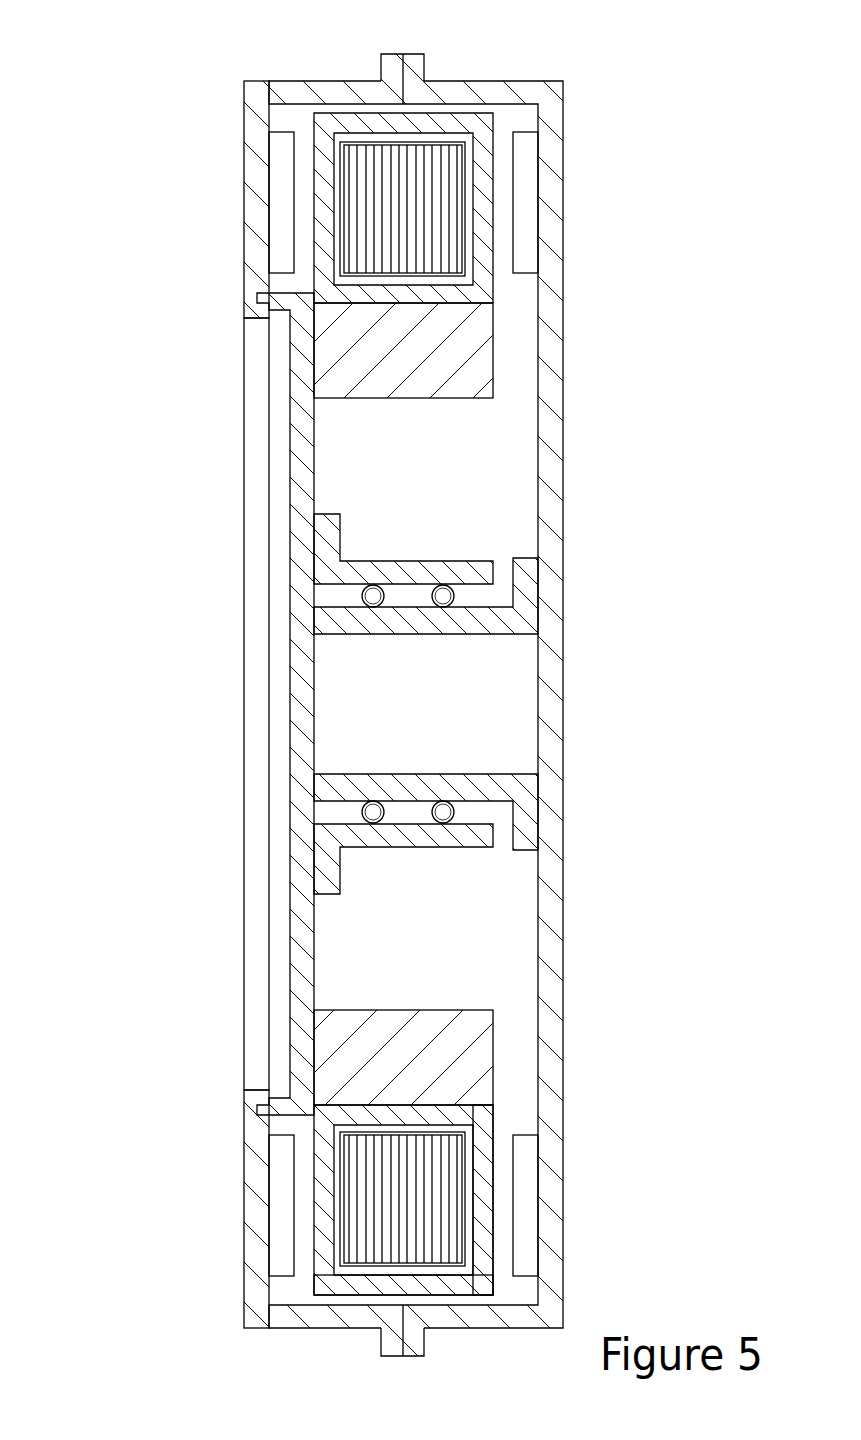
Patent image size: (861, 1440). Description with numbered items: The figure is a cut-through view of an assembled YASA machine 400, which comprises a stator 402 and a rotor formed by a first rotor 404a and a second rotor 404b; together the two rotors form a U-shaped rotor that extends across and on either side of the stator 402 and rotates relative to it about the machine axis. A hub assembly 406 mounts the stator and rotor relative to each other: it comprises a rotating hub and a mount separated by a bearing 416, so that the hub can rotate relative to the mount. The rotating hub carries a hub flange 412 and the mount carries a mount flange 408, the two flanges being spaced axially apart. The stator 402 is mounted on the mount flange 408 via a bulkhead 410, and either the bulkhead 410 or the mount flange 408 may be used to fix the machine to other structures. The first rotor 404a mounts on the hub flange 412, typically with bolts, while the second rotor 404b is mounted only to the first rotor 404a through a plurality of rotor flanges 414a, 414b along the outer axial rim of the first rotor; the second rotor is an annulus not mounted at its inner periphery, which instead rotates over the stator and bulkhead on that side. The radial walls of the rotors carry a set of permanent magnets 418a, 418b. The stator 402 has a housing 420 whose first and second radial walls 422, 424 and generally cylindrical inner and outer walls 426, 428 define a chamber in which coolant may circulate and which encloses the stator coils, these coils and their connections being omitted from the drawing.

The YASA machine 400 is at (161, 60).
The stator 402 is at (312, 271).
The first rotor 404a is at (557, 192).
The second rotor 404b is at (255, 164).
The hub assembly 406 is at (432, 663).
The mount flange 408 is at (323, 533).
The bulkhead 410 is at (302, 927).
The hub flange 412 is at (530, 571).
The rotor flange 414a is at (410, 73).
The rotor flange 414b is at (388, 66).
The bearing 416 is at (368, 597).
The permanent magnets 418a is at (530, 158).
The slot in housing 418b is at (282, 238).
The housing 420 is at (455, 115).
The first radial wall 422 is at (478, 1190).
The second radial wall 424 is at (327, 1193).
The inner wall 426 is at (427, 380).
The outer wall 428 is at (422, 1289).